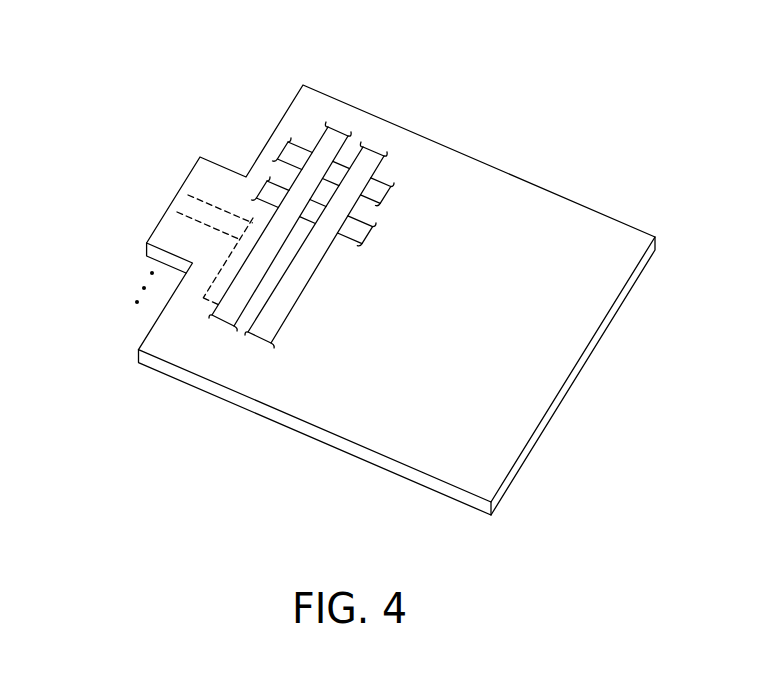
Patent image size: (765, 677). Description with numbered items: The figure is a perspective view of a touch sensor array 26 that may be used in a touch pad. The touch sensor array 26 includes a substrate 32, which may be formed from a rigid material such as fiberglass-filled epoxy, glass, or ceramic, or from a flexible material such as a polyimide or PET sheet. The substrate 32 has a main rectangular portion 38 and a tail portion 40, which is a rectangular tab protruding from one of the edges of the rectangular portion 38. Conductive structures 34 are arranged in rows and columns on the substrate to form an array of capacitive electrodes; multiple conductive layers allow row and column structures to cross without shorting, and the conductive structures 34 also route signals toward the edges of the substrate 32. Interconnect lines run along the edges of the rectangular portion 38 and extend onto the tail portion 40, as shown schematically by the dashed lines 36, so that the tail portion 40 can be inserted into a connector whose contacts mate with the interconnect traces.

The touch sensor array 26 is at (527, 68).
The substrate 32 is at (542, 382).
The conductive structures 34 is at (380, 165).
The dashed lines 36 is at (186, 212).
The rectangular portion 38 is at (482, 527).
The tail portion 40 is at (257, 163).